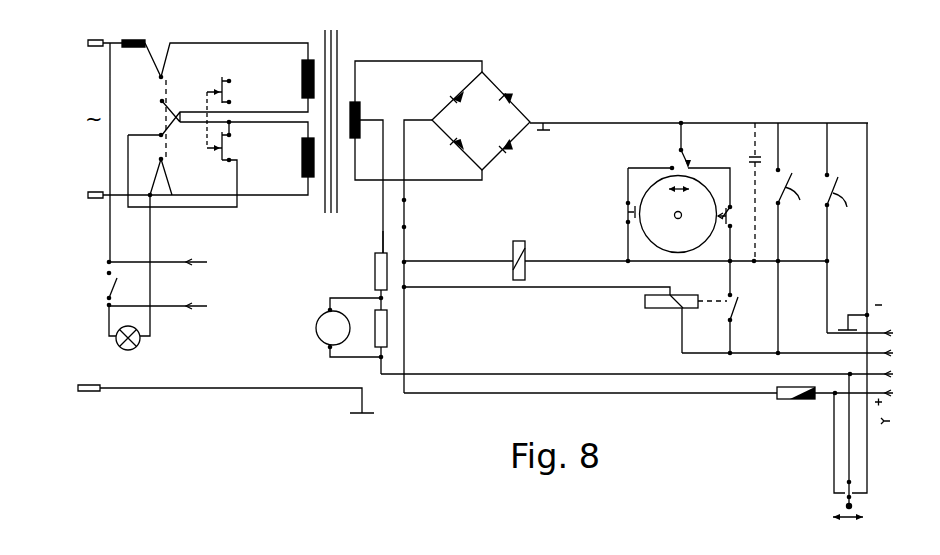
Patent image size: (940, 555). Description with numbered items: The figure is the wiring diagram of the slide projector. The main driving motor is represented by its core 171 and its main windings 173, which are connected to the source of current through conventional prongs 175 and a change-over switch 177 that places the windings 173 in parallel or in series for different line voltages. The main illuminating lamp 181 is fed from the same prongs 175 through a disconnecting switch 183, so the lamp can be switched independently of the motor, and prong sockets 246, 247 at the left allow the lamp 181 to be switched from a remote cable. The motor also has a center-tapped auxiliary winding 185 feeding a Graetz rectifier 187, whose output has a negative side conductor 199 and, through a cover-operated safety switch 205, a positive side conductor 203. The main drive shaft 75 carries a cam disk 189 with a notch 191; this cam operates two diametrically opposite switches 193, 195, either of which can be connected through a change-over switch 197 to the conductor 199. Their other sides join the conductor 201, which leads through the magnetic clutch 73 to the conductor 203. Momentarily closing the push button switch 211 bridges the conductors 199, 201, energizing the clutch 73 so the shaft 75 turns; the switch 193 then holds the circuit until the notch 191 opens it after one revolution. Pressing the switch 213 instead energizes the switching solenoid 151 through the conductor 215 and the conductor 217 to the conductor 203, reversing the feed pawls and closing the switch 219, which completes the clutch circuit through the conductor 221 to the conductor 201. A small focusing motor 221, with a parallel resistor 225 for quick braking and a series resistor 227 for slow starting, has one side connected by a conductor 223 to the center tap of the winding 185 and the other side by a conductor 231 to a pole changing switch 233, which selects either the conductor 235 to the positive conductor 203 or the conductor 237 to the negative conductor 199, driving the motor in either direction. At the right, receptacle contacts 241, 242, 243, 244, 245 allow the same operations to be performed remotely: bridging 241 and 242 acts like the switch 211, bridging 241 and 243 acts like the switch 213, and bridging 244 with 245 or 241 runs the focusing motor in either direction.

The magnetic clutch 73 is at (513, 250).
The main drive shaft 75 is at (674, 215).
The switching solenoid 151 is at (643, 302).
The motor core 171 is at (326, 40).
The main windings 173 is at (302, 80).
The prongs 175 is at (100, 48).
The change-over switch 177 is at (182, 103).
The main illuminating lamp 181 is at (133, 350).
The disconnecting switch 183 is at (108, 285).
The auxiliary winding 185 is at (361, 112).
The rectifier 187 is at (488, 90).
The cam disk 189 is at (655, 187).
The notch 191 is at (714, 213).
The switch 193 is at (732, 218).
The switch 195 is at (627, 210).
The change-over switch 197 is at (679, 157).
The negative side conductor 199 is at (620, 123).
The circuit conductor 201 is at (584, 261).
The circuit conductor 203 is at (408, 168).
The safety switch 205 is at (412, 207).
The push button switch 211 is at (840, 228).
The switch 213 is at (795, 238).
The conductor 215 is at (801, 352).
The conductor 217 is at (526, 287).
The switch 219 is at (735, 315).
The focusing motor 221 is at (316, 328).
The conductor 223 is at (383, 231).
The parallel resistor 225 is at (387, 330).
The series resistor 227 is at (375, 268).
The conductor 231 is at (491, 374).
The pole changing switch 233 is at (845, 497).
The conductor 235 is at (470, 393).
The conductor 237 is at (863, 450).
The receptacle contact 241 is at (891, 313).
The receptacle contact 242 is at (876, 335).
The receptacle contact 243 is at (803, 358).
The receptacle contact 244 is at (887, 378).
The receptacle contact 245 is at (852, 405).
The prong socket 246 is at (176, 261).
The prong socket 247 is at (174, 306).